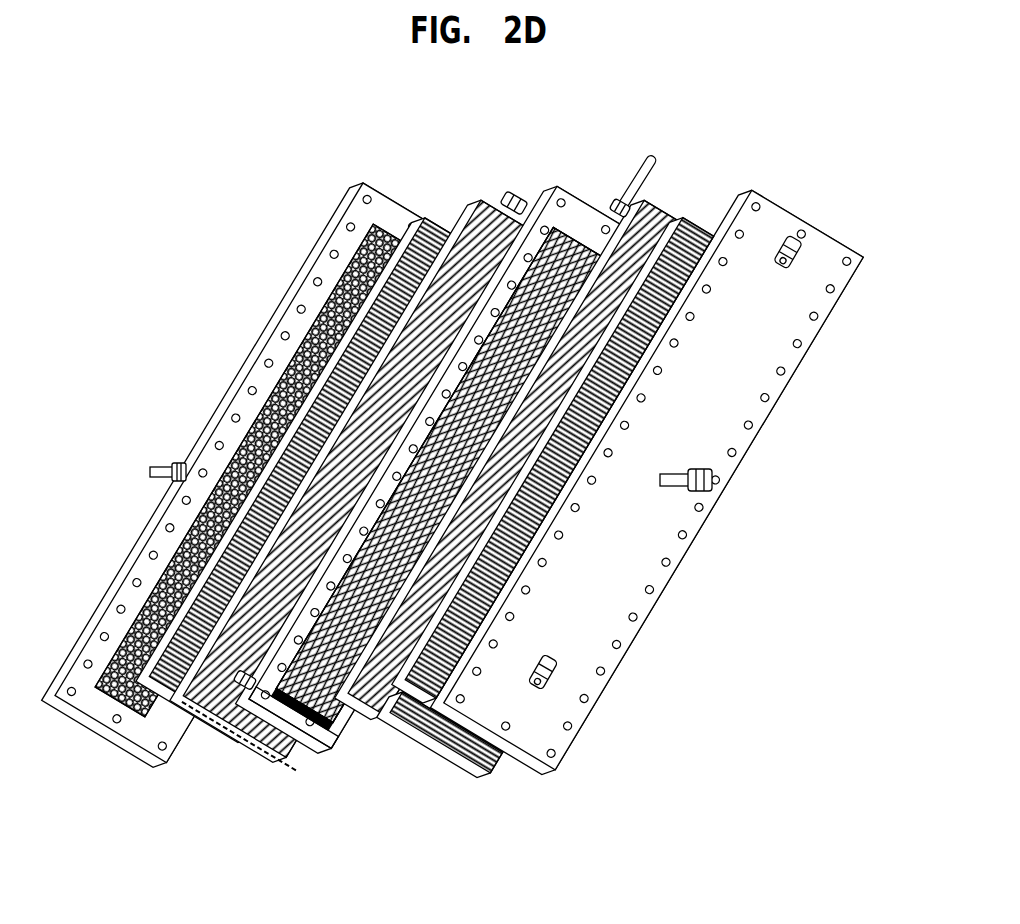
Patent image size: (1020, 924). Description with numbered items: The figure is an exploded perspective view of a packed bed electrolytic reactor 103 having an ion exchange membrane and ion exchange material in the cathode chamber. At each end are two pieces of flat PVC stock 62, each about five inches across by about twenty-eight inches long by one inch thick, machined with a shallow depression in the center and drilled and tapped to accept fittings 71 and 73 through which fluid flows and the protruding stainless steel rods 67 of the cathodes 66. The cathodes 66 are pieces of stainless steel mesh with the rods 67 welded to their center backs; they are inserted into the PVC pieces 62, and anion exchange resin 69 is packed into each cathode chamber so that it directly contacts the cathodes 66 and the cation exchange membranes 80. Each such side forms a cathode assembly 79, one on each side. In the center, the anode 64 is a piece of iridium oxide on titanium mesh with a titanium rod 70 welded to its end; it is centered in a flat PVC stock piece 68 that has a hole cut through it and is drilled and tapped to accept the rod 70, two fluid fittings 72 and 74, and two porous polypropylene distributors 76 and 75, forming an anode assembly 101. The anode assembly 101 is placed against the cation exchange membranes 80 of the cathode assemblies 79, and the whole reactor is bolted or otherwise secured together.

The flat PVC stock 62 is at (262, 322).
The anode 64 is at (314, 724).
The cathodes 66 is at (258, 397).
The stainless steel rods 67 is at (150, 472).
The flat PVC stock 68 is at (286, 710).
The anion exchange resin 69 is at (497, 598).
The titanium rod 70 is at (649, 158).
The fitting 71 is at (556, 672).
The fitting 72 is at (244, 688).
The fitting 73 is at (800, 250).
The fitting 74 is at (506, 197).
The porous polypropylene distributor 75 is at (570, 216).
The porous polypropylene distributor 76 is at (340, 718).
The cathode assemblies 79 is at (112, 566).
The cation exchange membranes 80 is at (410, 700).
The anode assembly 101 is at (532, 186).
The packed bed electrolytic reactor 103 is at (302, 233).